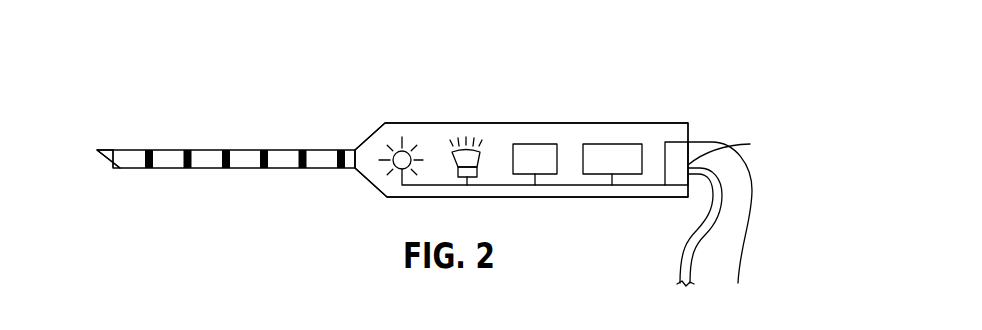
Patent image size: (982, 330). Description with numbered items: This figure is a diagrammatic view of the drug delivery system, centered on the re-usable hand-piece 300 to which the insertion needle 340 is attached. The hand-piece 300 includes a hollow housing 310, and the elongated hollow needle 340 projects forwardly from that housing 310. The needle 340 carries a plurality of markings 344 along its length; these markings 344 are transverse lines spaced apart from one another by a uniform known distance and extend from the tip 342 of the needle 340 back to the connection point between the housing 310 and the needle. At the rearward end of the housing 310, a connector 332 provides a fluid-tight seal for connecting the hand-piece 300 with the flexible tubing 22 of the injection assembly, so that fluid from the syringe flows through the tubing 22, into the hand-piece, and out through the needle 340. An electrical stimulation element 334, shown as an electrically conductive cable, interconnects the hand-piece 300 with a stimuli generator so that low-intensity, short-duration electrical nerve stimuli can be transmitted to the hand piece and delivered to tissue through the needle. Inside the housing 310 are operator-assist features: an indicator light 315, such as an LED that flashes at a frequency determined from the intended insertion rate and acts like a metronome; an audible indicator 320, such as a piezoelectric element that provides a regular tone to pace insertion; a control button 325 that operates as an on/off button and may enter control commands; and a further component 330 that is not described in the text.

The hand-piece 300 is at (304, 79).
The hollow housing 310 is at (371, 182).
The indicator light 315 is at (396, 153).
The audible indicator 320 is at (467, 151).
The control button 325 is at (543, 143).
The power source 330 is at (623, 143).
The connector 332 is at (750, 144).
The electrical stimulation element 334 is at (703, 141).
The insertion needle 340 is at (163, 157).
The needle tip 342 is at (97, 150).
The markings 344 is at (297, 158).
The flexible tubing 22 is at (678, 262).